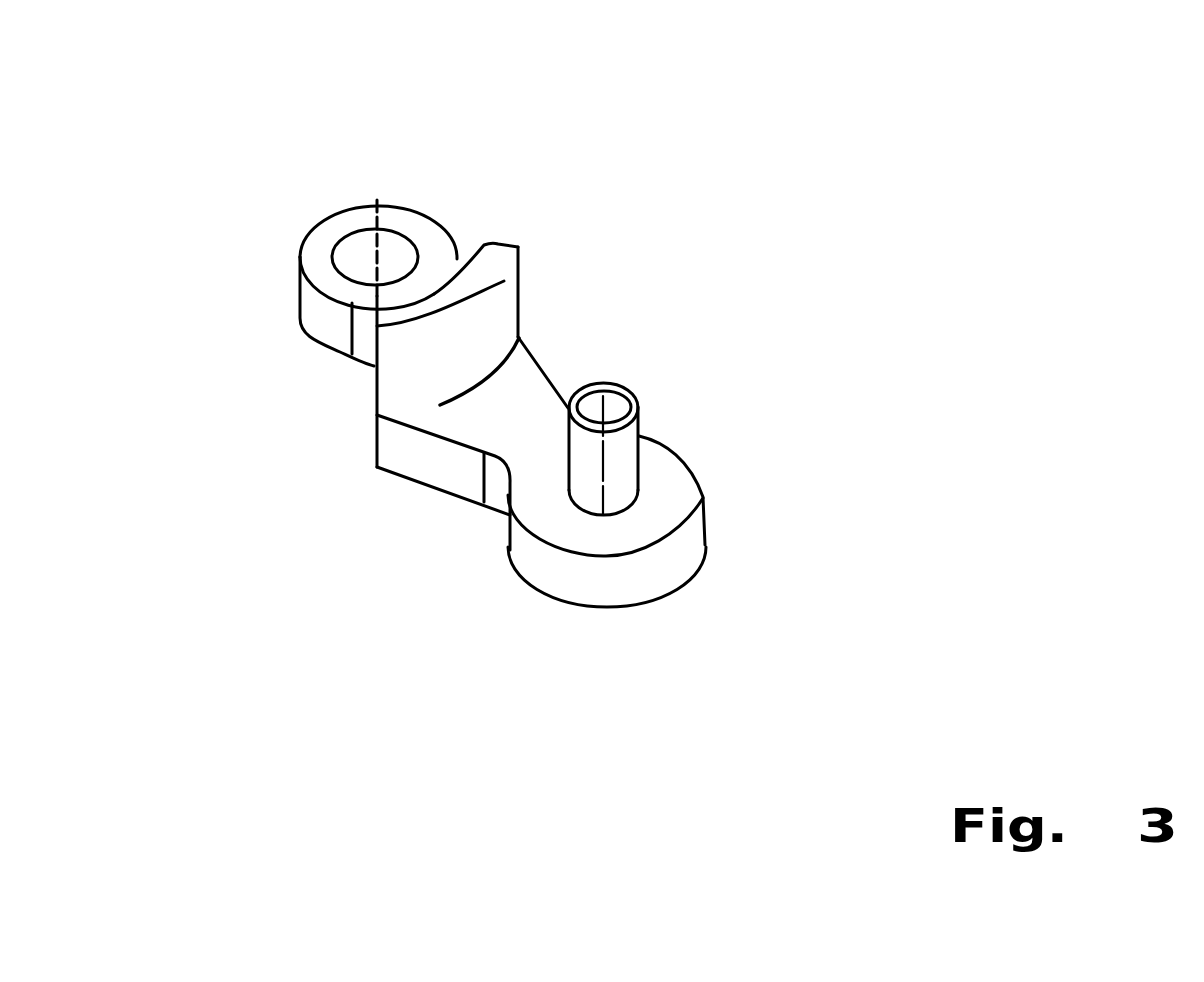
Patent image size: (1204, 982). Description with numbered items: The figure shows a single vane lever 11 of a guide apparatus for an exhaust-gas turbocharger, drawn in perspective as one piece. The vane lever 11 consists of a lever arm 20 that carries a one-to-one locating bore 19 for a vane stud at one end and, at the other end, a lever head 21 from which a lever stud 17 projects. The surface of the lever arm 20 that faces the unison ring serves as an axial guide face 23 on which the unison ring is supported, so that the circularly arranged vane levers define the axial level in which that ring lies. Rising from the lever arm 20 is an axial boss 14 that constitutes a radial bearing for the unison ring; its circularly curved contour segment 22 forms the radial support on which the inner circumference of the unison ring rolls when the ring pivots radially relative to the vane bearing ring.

The vane lever 11 is at (797, 97).
The axial boss 14 is at (403, 312).
The lever stud 17 is at (753, 388).
The locating bore 19 is at (455, 130).
The lever arm 20 is at (410, 600).
The lever head 21 is at (817, 445).
The circularly curved contour segment 22 is at (508, 287).
The axial guide face 23 is at (672, 337).